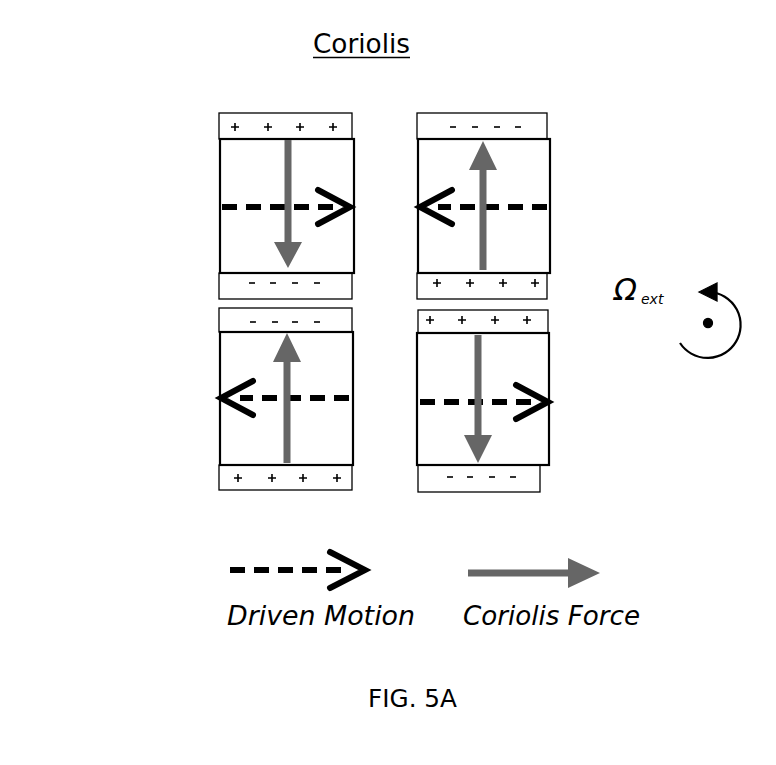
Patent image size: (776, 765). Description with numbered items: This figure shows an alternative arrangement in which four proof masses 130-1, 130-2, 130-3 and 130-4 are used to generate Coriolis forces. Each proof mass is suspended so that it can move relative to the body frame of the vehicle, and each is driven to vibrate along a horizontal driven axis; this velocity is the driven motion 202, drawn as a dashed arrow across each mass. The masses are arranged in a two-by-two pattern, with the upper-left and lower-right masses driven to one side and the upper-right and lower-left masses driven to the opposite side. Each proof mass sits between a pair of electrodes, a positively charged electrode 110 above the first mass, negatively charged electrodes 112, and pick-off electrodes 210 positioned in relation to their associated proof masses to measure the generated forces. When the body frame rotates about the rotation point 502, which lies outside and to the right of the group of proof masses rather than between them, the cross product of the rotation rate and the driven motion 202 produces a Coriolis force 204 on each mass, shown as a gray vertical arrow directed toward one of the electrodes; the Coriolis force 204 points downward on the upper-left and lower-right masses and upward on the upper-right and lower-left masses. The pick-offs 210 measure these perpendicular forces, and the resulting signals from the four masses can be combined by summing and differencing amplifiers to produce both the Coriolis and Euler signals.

The positively charged electrode 110 is at (247, 113).
The negatively charged electrode 112 is at (233, 298).
The first proof mass 130-1 is at (240, 177).
The second proof mass 130-2 is at (535, 238).
The third proof mass 130-3 is at (227, 418).
The fourth proof mass 130-4 is at (537, 435).
The driven motion 202 is at (233, 210).
The Coriolis force 204 is at (282, 236).
The pick-off 210 is at (545, 288).
The rotation point 502 is at (702, 322).